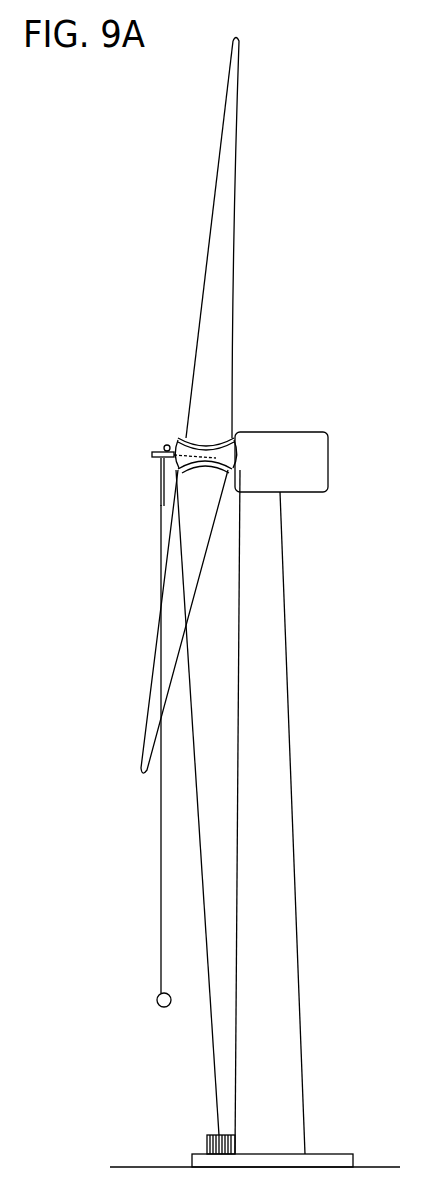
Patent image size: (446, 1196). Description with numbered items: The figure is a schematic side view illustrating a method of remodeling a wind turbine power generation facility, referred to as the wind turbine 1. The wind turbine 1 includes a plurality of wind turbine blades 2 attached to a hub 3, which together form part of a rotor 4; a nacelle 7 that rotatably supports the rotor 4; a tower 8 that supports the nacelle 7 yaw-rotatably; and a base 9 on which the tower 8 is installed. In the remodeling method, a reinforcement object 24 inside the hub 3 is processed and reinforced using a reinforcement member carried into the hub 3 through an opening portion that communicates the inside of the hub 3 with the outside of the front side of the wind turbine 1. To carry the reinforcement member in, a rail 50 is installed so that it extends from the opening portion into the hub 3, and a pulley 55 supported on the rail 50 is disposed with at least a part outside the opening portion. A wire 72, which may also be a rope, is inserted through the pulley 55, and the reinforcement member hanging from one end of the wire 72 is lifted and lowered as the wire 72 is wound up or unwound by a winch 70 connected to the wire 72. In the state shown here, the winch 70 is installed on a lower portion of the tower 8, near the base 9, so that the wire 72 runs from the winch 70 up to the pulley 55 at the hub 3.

The wind turbine 1 is at (327, 108).
The wind turbine blades 2 is at (217, 180).
The hub 3 is at (181, 436).
The rotor 4 is at (118, 383).
The nacelle 7 is at (329, 461).
The tower 8 is at (294, 820).
The base 9 is at (331, 1154).
The reinforcement object 24 is at (157, 1000).
The rail 50 is at (152, 455).
The pulley 55 is at (167, 446).
The winch 70 is at (207, 1140).
The wire 72 is at (170, 503).